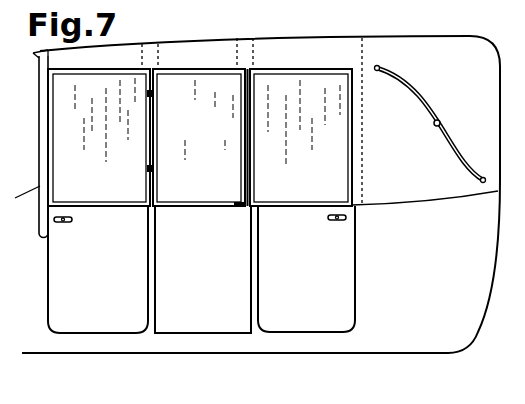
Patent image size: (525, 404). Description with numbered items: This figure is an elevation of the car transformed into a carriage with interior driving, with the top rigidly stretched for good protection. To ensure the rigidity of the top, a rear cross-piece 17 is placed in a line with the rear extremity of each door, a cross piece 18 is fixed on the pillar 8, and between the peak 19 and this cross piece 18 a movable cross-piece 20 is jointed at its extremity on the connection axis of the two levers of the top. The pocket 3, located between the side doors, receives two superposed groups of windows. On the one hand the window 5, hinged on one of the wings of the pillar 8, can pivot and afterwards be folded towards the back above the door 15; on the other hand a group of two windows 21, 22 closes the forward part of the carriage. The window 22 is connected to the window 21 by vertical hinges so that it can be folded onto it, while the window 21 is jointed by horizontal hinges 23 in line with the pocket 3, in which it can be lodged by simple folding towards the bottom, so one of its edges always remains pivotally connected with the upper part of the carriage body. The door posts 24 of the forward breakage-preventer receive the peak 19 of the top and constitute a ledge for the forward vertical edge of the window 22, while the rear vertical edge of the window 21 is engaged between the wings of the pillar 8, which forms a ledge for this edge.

The pocket 3 is at (207, 334).
The window 5 is at (301, 137).
The pillar 8 is at (246, 157).
The door 15 is at (306, 269).
The rear cross-piece 17 is at (362, 40).
The cross piece 18 is at (244, 42).
The peak 19 is at (41, 60).
The movable cross-piece 20 is at (151, 48).
The window 21 is at (199, 137).
The window 22 is at (57, 149).
The horizontal hinges 23 is at (158, 204).
The door posts 24 is at (40, 109).